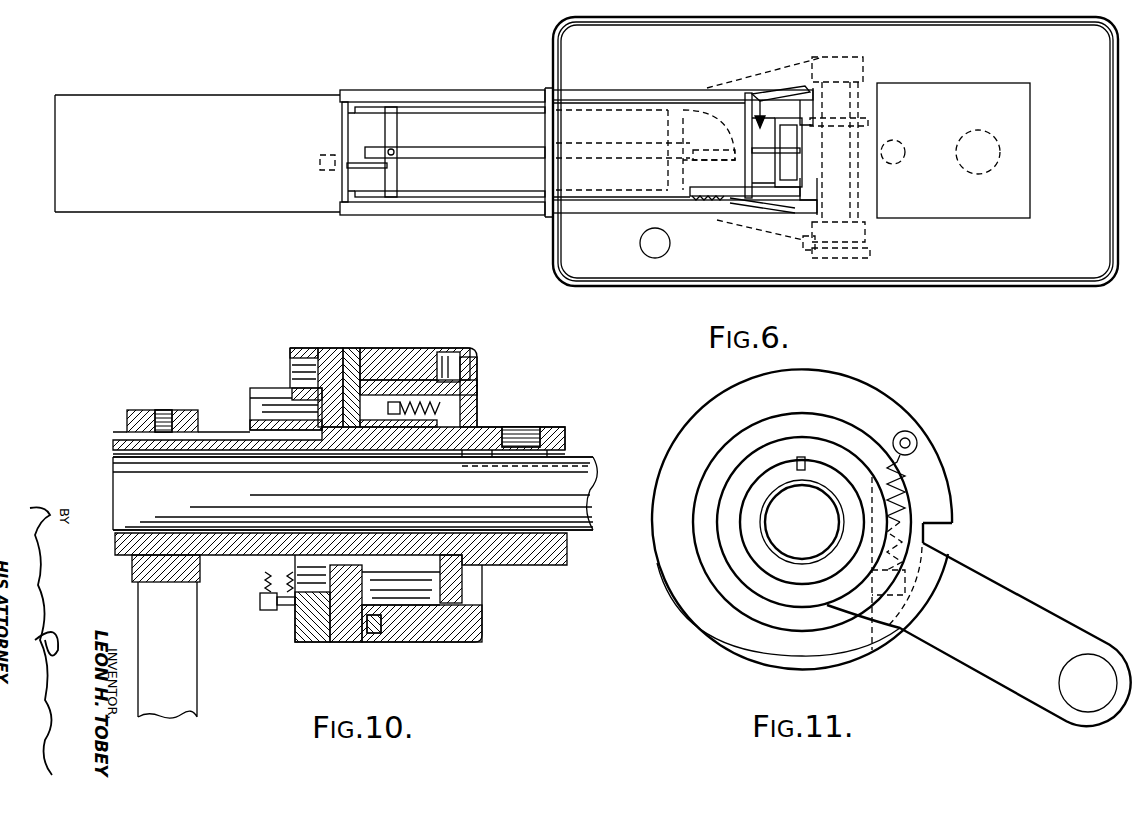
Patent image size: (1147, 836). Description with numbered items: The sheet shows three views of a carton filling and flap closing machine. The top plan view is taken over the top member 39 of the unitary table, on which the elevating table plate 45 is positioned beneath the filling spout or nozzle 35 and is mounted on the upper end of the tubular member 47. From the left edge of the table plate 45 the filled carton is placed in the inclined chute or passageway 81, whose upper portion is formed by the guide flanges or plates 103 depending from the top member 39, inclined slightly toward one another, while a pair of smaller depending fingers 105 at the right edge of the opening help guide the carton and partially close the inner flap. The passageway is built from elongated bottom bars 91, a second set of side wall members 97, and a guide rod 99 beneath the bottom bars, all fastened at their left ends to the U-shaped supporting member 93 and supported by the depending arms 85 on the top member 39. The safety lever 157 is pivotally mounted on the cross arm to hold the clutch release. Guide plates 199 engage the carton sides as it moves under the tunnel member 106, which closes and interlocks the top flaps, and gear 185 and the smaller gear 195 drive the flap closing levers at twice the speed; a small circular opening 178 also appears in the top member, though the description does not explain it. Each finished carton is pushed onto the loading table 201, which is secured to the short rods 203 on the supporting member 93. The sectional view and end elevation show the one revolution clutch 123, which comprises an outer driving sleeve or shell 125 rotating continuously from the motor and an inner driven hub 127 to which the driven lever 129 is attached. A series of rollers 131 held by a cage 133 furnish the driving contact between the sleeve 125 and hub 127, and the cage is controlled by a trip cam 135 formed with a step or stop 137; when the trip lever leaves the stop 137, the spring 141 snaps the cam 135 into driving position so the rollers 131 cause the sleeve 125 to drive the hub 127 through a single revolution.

In FIG. 6, the loading table 201 is at (200, 112).
In FIG. 6, the side wall members 97 is at (366, 212).
In FIG. 6, the short rods 203 is at (359, 161).
In FIG. 6, the U-shaped supporting member 93 is at (390, 124).
In FIG. 6, the elongated members or bars 91 is at (441, 197).
In FIG. 6, the guide rod 99 is at (524, 148).
In FIG. 6, the safety lever 157 is at (706, 135).
In FIG. 6, the inclined chute or passageway 81 is at (759, 98).
In FIG. 6, the guide flanges or plates 103 is at (787, 208).
In FIG. 6, the depending arms 85 is at (866, 232).
In FIG. 6, the flat plate or member 45 is at (945, 100).
In FIG. 6, the rod or tubular member 47 is at (903, 145).
In FIG. 6, the filling spout or nozzle 35 is at (979, 140).
In FIG. 6, the depending fingers or members 105 is at (781, 145).
In FIG. 6, the tunnel member 106 is at (620, 178).
In FIG. 6, the hole 178 is at (670, 243).
In FIG. 6, the guide plates 199 is at (740, 198).
In FIG. 6, the gear 195 is at (812, 254).
In FIG. 6, the gear 185 is at (870, 252).
In FIG. 6, the top member 39 is at (990, 258).
In FIG. 10, the cage 133 is at (351, 352).
In FIG. 10, the one revolution clutch 123 is at (537, 396).
In FIG. 11, the one revolution clutch 123 is at (967, 445).
In FIG. 10, the inner driven hub 127 is at (226, 552).
In FIG. 11, the inner driven hub 127 is at (790, 473).
In FIG. 10, the driven lever 129 is at (190, 672).
In FIG. 11, the driven lever 129 is at (1012, 605).
In FIG. 10, the trip cam 135 is at (313, 636).
In FIG. 11, the trip cam 135 is at (930, 482).
In FIG. 10, the rollers 131 is at (412, 590).
In FIG. 10, the outer driving sleeve or shell 125 is at (446, 644).
In FIG. 11, the outer driving sleeve or shell 125 is at (886, 398).
In FIG. 11, the spring 141 is at (898, 500).
In FIG. 11, the step or stop 137 is at (942, 527).